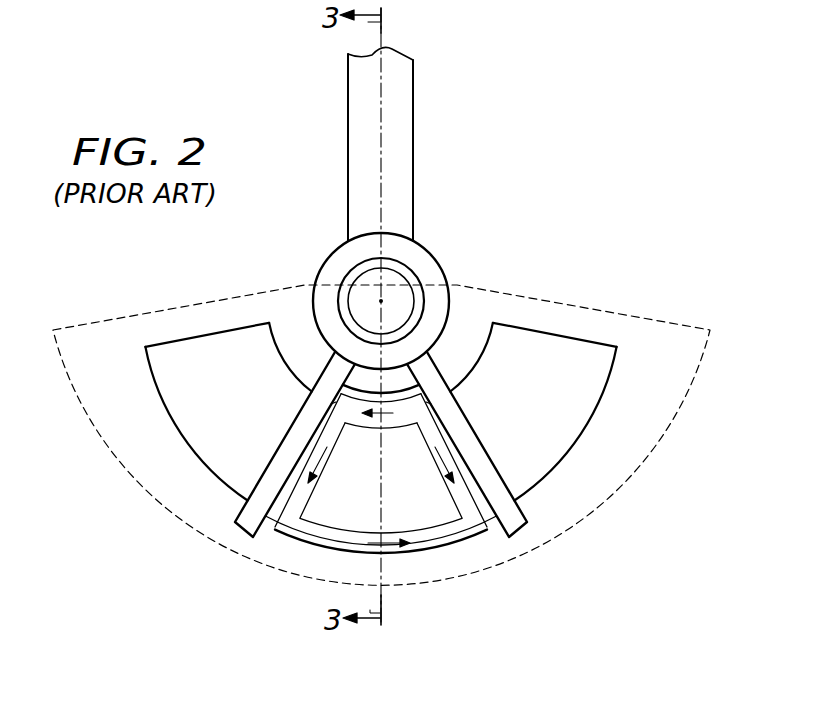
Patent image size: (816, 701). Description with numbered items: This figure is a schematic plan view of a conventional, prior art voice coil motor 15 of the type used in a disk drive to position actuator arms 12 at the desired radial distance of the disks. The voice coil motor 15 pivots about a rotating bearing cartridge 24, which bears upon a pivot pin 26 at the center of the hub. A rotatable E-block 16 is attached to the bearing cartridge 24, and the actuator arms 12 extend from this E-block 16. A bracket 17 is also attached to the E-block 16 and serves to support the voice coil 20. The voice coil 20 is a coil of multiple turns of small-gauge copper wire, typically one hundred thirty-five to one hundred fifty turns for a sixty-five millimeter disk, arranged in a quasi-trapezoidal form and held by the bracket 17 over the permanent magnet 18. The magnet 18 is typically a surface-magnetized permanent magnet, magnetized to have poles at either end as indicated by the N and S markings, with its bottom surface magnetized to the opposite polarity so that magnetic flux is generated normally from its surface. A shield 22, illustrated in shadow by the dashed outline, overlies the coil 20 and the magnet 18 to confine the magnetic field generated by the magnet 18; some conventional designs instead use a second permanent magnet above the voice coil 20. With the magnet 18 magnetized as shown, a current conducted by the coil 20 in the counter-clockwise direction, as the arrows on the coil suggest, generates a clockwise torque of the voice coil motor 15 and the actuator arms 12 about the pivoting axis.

The actuator arms 12 is at (348, 106).
The voice coil motor 15 is at (542, 213).
The E-block 16 is at (448, 284).
The bracket 17 is at (481, 442).
The permanent magnet 18 is at (221, 413).
The voice coil 20 is at (320, 546).
The shield 22 is at (143, 313).
The bearing cartridge 24 is at (413, 268).
The pivot pin 26 is at (358, 296).